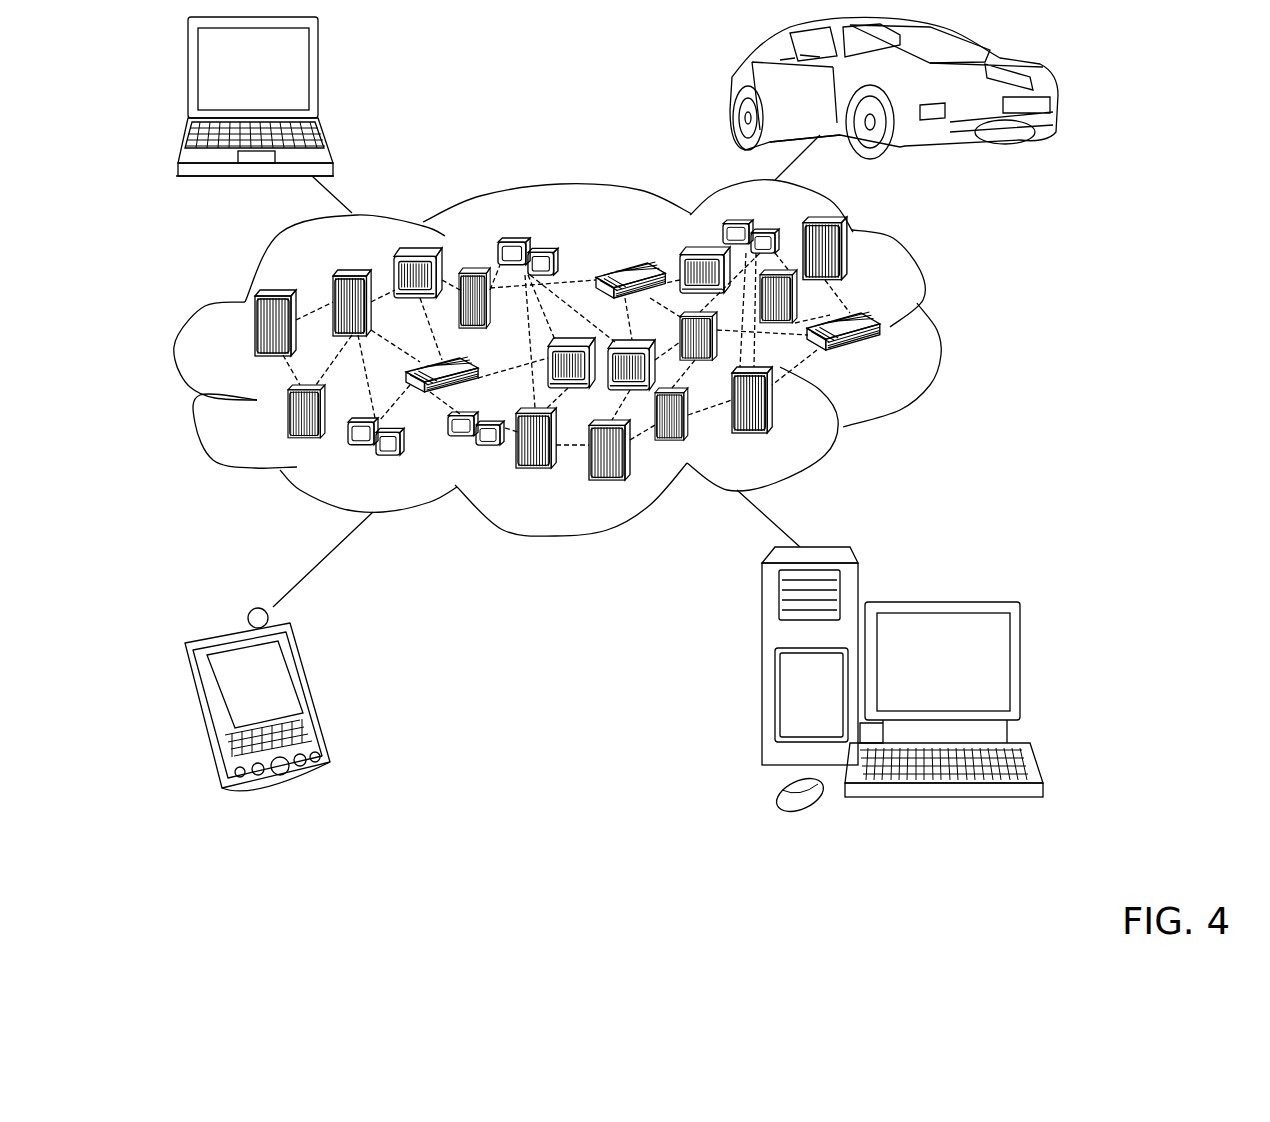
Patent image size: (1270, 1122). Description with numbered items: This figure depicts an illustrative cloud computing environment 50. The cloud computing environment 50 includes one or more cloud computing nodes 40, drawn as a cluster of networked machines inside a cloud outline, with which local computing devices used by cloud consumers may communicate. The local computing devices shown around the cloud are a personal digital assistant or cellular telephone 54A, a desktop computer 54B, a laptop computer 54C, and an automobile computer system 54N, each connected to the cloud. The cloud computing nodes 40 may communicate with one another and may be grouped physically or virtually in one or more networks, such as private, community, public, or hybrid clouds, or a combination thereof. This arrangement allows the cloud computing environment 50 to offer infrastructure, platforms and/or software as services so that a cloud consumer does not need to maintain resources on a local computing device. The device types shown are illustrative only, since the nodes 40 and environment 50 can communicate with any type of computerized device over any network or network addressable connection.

The cloud computing environment 50 is at (940, 332).
The cloud computing node 40 is at (900, 362).
The personal digital assistant or cellular telephone 54A is at (313, 690).
The desktop computer 54B is at (938, 601).
The laptop computer 54C is at (318, 73).
The automobile computer system 54N is at (730, 88).